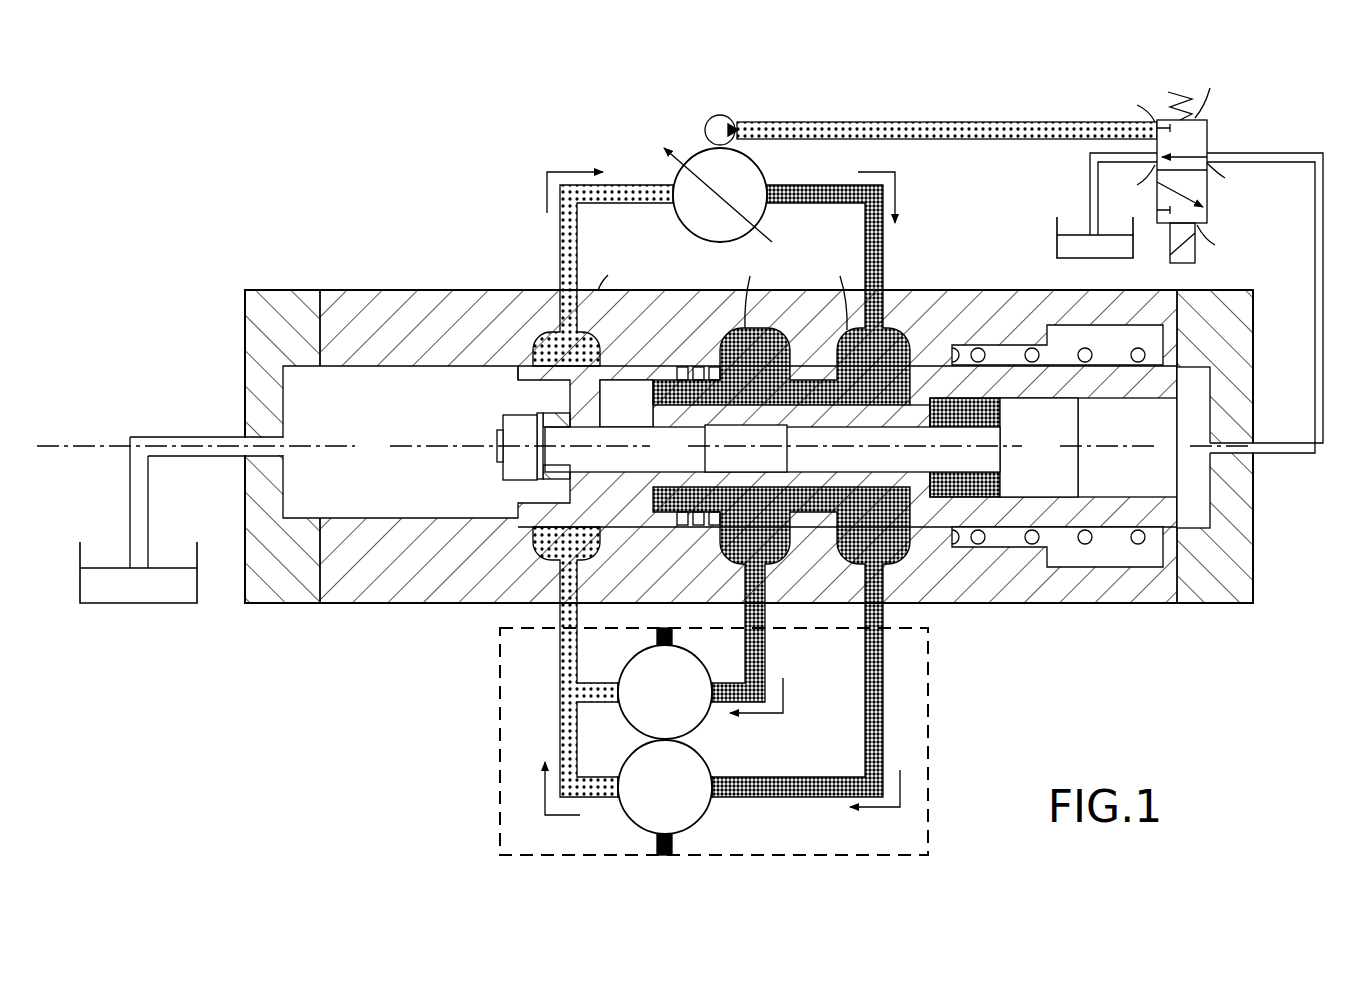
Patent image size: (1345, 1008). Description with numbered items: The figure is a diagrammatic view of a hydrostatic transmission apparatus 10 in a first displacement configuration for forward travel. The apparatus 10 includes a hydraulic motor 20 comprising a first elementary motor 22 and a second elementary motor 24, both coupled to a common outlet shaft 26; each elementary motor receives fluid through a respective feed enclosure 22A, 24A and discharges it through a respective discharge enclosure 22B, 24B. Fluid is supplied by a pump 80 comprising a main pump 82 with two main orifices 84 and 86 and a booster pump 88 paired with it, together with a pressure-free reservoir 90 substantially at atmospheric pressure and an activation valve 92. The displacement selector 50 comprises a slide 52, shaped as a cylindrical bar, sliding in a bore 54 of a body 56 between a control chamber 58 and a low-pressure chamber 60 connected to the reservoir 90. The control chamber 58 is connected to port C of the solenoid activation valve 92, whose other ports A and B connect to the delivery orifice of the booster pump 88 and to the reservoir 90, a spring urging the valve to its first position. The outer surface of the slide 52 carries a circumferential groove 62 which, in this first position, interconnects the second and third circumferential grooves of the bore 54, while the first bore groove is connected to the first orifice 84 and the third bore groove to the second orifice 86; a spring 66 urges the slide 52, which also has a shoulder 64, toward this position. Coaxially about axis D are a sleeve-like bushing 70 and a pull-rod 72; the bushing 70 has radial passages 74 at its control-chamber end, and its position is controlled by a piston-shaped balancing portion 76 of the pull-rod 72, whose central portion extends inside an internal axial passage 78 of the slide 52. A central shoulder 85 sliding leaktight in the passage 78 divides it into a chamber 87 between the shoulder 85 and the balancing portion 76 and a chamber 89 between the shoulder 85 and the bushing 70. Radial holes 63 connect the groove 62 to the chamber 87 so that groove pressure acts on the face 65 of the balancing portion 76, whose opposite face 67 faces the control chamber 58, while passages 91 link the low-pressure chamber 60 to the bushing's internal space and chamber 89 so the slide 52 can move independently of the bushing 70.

The hydrostatic transmission apparatus 10 is at (680, 462).
The hydraulic motor 20 is at (675, 753).
The first elementary motor 22 is at (651, 706).
The feed enclosure 22A is at (722, 683).
The discharge enclosure 22B is at (600, 683).
The second elementary motor 24 is at (651, 801).
The feed enclosure 24A is at (728, 777).
The discharge enclosure 24B is at (600, 777).
The common outlet shaft 26 is at (675, 848).
The displacement selector 50 is at (749, 438).
The slide 52 is at (1085, 565).
The bore 54 is at (495, 311).
The body 56 is at (345, 296).
The control chamber 58 is at (1159, 461).
The low-pressure chamber 60 is at (388, 461).
The circumferential groove 62 is at (795, 540).
The radial holes 63 is at (922, 485).
The shoulder 64 is at (1190, 578).
The face 65 is at (995, 412).
The spring 66 is at (1057, 491).
The face 67 is at (1083, 428).
The bushing 70 is at (847, 414).
The pull-rod 72 is at (552, 455).
The radial passages 74 is at (712, 512).
The balancing portion 76 is at (1026, 461).
The internal axial passage 78 is at (1100, 405).
The pump 80 is at (852, 155).
The main pump 82 is at (690, 226).
The first orifice 84 is at (673, 188).
The central shoulder 85 is at (795, 545).
The second orifice 86 is at (766, 188).
The chamber 87 is at (905, 410).
The booster pump 88 is at (720, 114).
The chamber 89 is at (622, 428).
The pressure-free reservoir 90 is at (135, 604).
The passages 91 is at (585, 460).
The activation valve 92 is at (1212, 132).